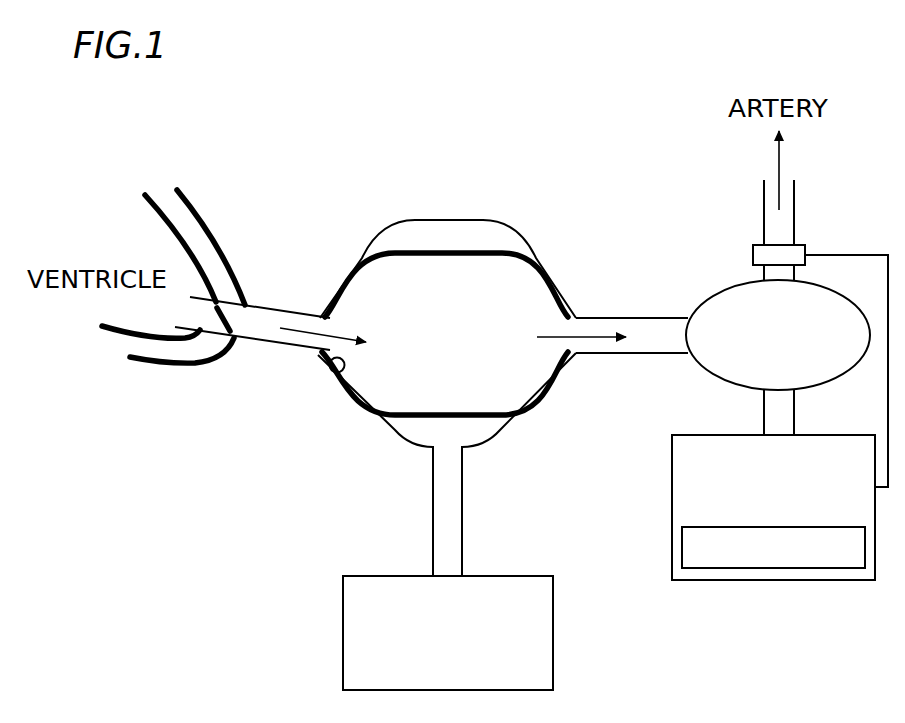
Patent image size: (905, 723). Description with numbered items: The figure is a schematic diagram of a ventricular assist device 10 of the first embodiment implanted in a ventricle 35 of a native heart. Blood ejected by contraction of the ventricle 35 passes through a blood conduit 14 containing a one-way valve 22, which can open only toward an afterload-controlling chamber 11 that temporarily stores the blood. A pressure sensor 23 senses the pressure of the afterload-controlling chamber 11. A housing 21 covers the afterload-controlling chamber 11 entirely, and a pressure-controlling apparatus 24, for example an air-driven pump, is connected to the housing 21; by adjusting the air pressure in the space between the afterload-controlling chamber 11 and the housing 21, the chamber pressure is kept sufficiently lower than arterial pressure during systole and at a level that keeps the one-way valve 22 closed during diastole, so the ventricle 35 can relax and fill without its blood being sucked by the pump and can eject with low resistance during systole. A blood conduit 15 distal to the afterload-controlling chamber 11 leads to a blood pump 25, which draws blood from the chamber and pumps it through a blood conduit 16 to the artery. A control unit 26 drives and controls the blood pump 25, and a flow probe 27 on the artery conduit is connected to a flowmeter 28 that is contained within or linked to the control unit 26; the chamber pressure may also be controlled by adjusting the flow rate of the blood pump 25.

The ventricular assist device 10 is at (447, 346).
The afterload-controlling chamber 11 is at (503, 252).
The blood conduit 14 is at (272, 342).
The blood conduit 15 is at (640, 317).
The blood conduit 16 is at (760, 192).
The housing 21 is at (388, 228).
The one-way valve 22 is at (232, 326).
The pressure sensor 23 is at (333, 373).
The pressure-controlling apparatus 24 is at (529, 576).
The blood pump 25 is at (703, 368).
The control unit 26 is at (672, 476).
The flow probe 27 is at (800, 246).
The flowmeter 28 is at (783, 569).
The ventricle 35 is at (193, 250).